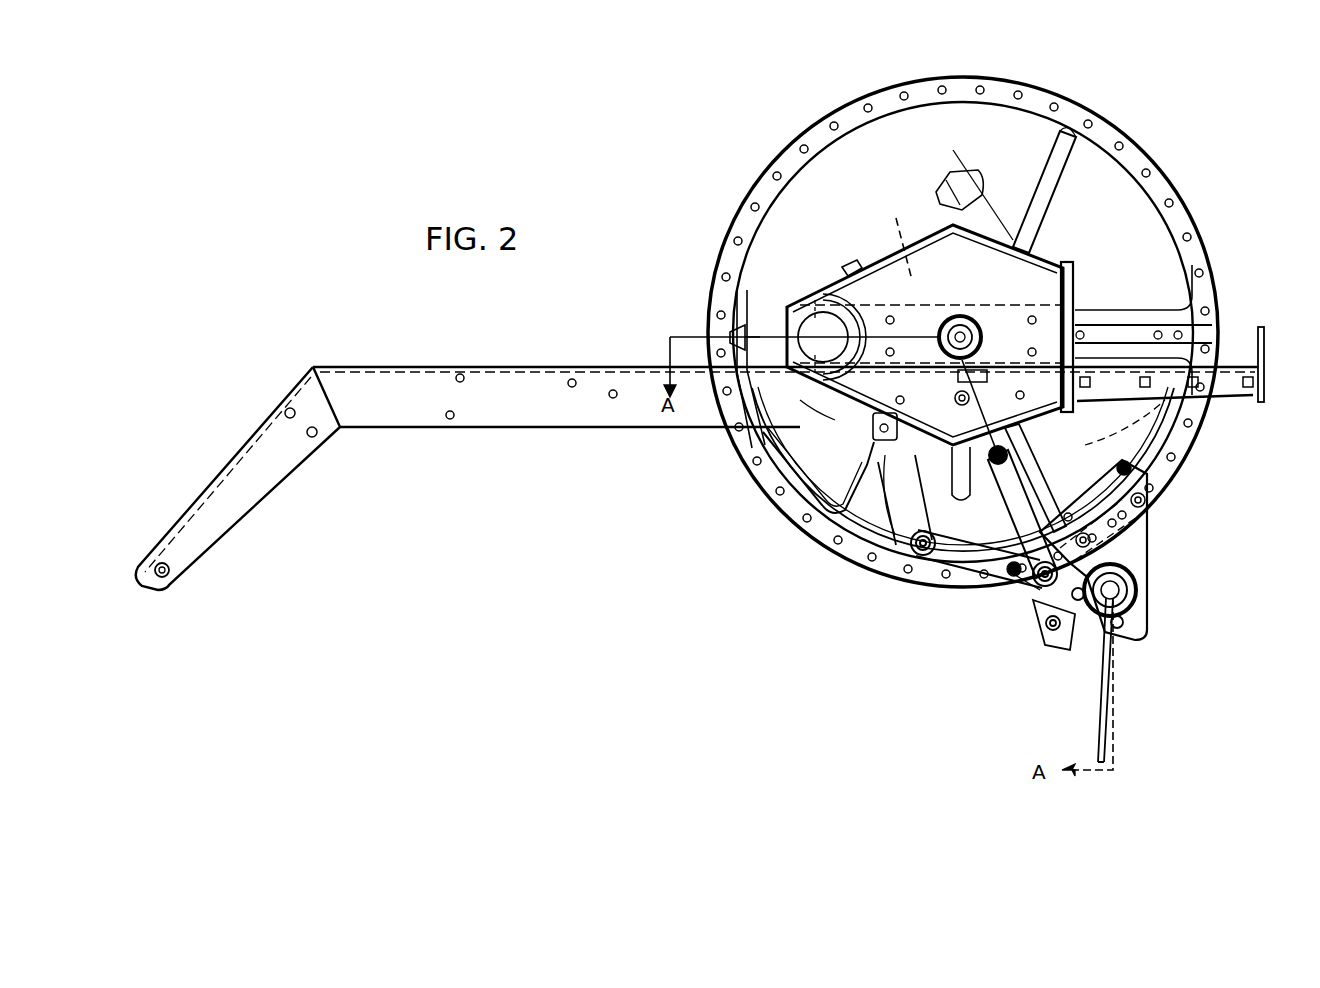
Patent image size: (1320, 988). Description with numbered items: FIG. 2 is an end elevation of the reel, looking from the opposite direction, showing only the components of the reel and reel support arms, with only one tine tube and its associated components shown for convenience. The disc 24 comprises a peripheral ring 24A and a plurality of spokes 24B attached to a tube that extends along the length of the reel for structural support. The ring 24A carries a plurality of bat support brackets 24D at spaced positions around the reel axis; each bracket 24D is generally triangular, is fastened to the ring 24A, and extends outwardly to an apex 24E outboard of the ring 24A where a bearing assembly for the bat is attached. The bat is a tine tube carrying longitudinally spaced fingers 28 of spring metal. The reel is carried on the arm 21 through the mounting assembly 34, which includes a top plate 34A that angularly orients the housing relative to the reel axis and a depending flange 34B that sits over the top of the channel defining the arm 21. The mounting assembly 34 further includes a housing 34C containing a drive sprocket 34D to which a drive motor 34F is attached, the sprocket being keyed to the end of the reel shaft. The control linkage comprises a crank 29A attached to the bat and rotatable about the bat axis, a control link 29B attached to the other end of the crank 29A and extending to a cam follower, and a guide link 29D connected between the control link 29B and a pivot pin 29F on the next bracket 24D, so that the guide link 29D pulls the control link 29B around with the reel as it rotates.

The arm 21 is at (632, 427).
The disc 24 is at (965, 362).
The peripheral ring 24A is at (873, 100).
The spokes 24B is at (1045, 192).
The bat support bracket 24D is at (1152, 548).
The apex 24E is at (1128, 640).
The fingers 28 is at (1100, 732).
The crank 29A is at (1068, 645).
The control link 29B is at (1005, 568).
The guide link 29D is at (942, 585).
The pivot pin 29F is at (898, 560).
The mounting assembly 34 is at (864, 320).
The top plate 34A is at (840, 428).
The depending flange 34B is at (880, 442).
The housing 34C is at (850, 268).
The drive sprocket 34D is at (896, 218).
The drive motor 34F is at (760, 305).